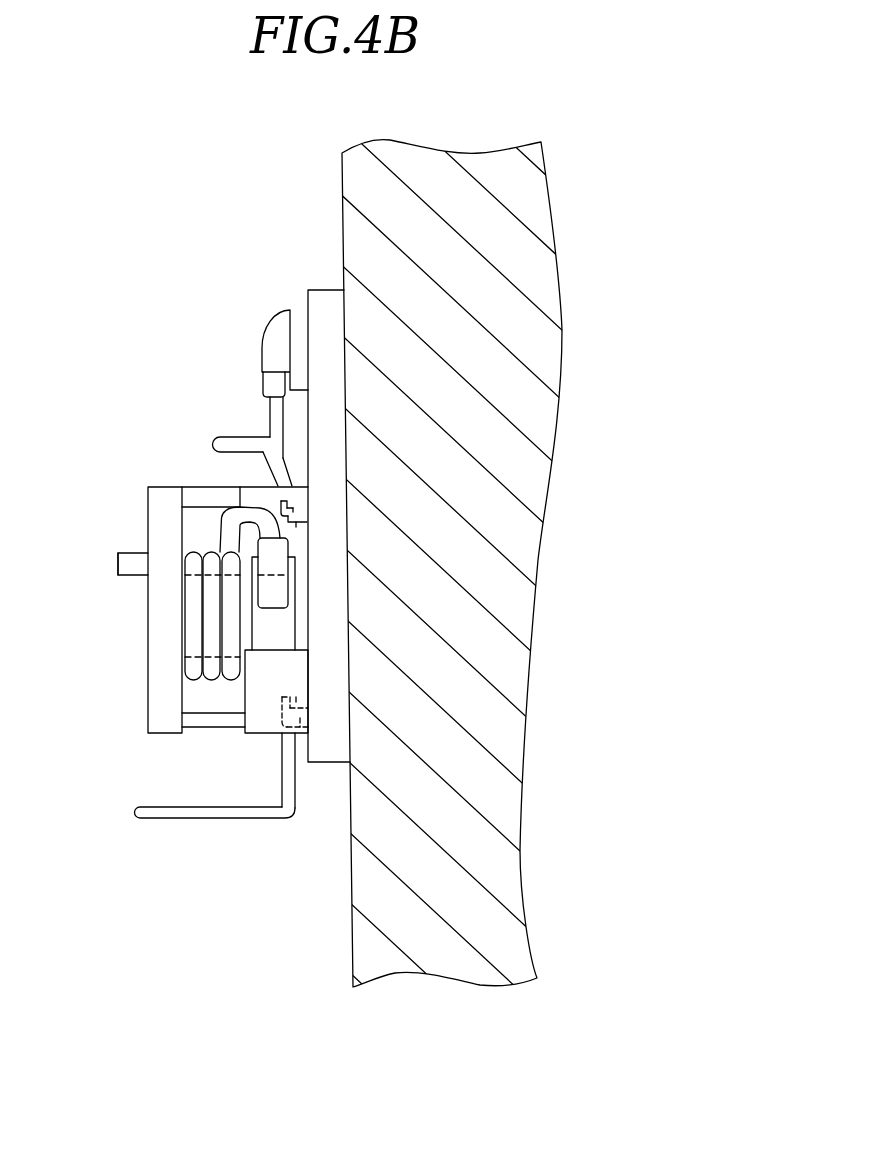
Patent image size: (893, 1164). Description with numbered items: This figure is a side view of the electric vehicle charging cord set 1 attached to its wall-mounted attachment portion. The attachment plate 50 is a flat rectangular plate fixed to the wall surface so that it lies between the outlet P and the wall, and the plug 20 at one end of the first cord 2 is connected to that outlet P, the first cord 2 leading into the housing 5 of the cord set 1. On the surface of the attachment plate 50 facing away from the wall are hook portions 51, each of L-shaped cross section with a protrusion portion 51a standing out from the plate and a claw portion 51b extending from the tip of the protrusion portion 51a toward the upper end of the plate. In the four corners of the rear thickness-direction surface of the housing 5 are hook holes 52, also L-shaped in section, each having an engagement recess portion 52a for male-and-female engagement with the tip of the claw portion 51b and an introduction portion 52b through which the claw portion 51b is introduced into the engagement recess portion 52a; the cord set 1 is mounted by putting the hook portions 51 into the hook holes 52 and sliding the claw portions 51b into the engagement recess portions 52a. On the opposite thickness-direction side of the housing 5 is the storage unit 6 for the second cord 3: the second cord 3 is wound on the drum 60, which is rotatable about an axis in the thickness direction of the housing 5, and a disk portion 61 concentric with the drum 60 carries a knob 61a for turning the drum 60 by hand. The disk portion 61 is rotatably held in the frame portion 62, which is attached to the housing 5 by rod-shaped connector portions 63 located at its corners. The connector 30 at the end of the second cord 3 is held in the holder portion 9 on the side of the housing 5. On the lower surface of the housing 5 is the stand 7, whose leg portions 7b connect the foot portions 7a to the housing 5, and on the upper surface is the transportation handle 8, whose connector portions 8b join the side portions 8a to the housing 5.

The cord set 1 is at (148, 485).
The first cord 2 is at (272, 408).
The second cord 3 is at (225, 530).
The housing 5 is at (209, 645).
The storage unit 6 is at (168, 730).
The stand 7 is at (233, 813).
The foot portions 7a is at (192, 818).
The leg portions 7b is at (288, 778).
The transportation handle 8 is at (279, 452).
The side portions 8a is at (238, 440).
The connector portions 8b is at (284, 466).
The holder portion 9 is at (253, 688).
The plug 20 is at (272, 380).
The connector 30 is at (270, 628).
The attachment plate 50 is at (333, 314).
The hook portions 51 is at (296, 524).
The protrusion portion 51a is at (292, 518).
The claw portion 51b is at (285, 512).
The hook holes 52 is at (303, 537).
The engagement recess portion 52a is at (288, 505).
The introduction portion 52b is at (300, 531).
The drum 60 is at (195, 605).
The disk portion 61 is at (117, 568).
The knob 61a is at (117, 560).
The frame portion 62 is at (143, 640).
The connector portions 63 is at (202, 490).
The outlet P is at (277, 323).